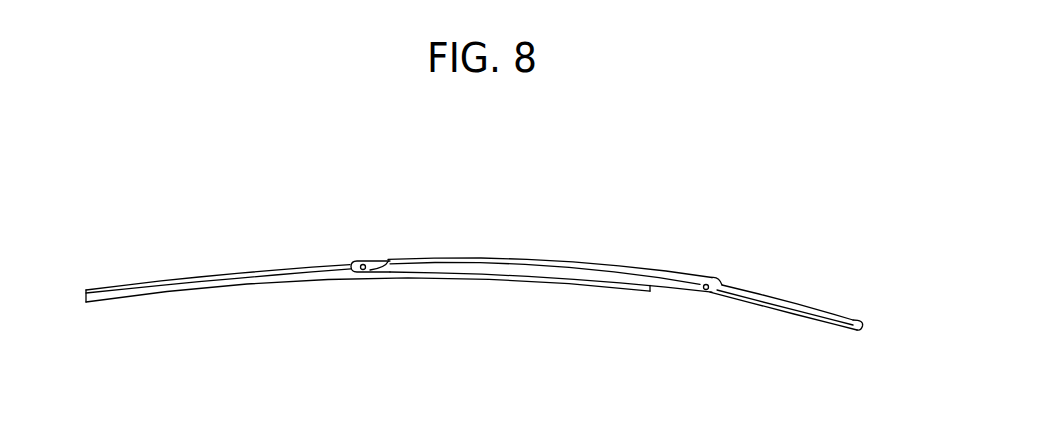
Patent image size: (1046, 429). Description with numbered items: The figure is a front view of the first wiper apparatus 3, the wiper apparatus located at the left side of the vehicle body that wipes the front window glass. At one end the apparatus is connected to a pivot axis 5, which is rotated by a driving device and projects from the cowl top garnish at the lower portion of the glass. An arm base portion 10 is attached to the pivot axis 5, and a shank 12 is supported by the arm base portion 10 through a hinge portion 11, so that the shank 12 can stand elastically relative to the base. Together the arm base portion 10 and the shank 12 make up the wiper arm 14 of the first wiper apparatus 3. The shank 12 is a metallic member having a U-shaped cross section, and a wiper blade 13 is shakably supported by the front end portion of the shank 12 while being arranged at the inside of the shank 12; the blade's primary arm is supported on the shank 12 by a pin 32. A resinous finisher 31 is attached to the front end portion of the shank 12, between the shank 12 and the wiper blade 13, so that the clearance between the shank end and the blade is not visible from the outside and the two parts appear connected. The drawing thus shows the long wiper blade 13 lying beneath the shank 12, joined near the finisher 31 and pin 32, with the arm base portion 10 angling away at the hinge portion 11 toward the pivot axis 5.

The first wiper apparatus 3 is at (498, 224).
The wiper blade 13 is at (230, 272).
The finisher 31 is at (353, 261).
The pin 32 is at (388, 260).
The shank 12 is at (597, 258).
The arm base portion 10 is at (757, 298).
The wiper arm 14 is at (660, 285).
The hinge portion 11 is at (704, 292).
The pivot axis 5 is at (858, 320).